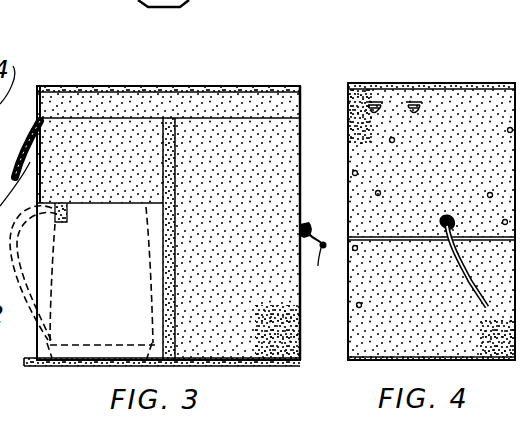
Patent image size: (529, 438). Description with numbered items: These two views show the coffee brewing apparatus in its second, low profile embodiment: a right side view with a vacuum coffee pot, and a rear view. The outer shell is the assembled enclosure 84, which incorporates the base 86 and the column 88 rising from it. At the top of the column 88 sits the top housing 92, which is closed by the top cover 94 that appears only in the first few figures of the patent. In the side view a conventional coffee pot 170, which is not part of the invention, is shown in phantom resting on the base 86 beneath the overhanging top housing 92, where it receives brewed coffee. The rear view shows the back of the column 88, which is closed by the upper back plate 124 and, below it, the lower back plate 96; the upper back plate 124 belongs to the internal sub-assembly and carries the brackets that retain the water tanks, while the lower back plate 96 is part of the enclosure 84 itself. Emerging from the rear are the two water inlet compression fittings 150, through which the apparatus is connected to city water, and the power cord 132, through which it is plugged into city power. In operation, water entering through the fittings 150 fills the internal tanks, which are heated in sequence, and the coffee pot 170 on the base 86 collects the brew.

In FIG. 3, the enclosure 84 is at (190, 86).
In FIG. 4, the enclosure 84 is at (504, 84).
In FIG. 3, the base 86 is at (232, 360).
In FIG. 4, the base 86 is at (498, 362).
In FIG. 3, the column 88 is at (302, 128).
In FIG. 3, the top housing 92 is at (72, 87).
In FIG. 3, the top cover 94 is at (166, 87).
In FIG. 4, the top cover 94 is at (403, 44).
In FIG. 4, the lower back plate 96 is at (368, 238).
In FIG. 4, the upper back plate 124 is at (488, 64).
In FIG. 3, the power cord 132 is at (318, 266).
In FIG. 4, the power cord 132 is at (467, 273).
In FIG. 4, the water inlet compression fittings 150 is at (452, 22).
In FIG. 3, the coffee pot 170 is at (83, 346).